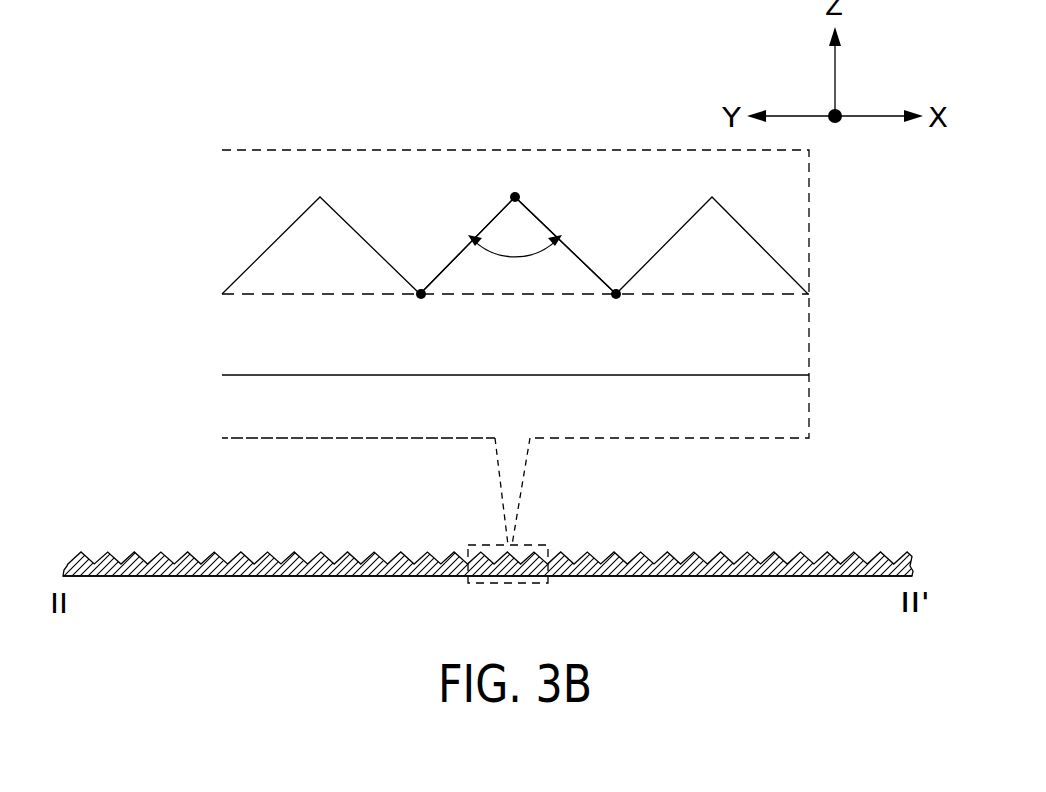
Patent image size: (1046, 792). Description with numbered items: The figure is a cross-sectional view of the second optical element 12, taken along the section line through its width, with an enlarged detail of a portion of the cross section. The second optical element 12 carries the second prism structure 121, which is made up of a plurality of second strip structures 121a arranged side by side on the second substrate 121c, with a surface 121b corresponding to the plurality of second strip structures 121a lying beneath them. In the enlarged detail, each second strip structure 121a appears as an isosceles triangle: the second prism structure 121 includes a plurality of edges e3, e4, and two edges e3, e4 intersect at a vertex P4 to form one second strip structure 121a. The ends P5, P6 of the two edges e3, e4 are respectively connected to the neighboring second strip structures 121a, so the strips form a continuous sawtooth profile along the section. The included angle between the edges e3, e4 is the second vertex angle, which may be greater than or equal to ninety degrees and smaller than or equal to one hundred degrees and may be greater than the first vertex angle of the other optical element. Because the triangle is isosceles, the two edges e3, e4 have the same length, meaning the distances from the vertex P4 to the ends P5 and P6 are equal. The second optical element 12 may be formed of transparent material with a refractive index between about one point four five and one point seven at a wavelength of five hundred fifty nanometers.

The second optical element 12 is at (100, 500).
The second prism structure 121 is at (505, 386).
The second strip structure 121a is at (735, 250).
The surface 121b is at (770, 376).
The second substrate 121c is at (770, 337).
The vertex P4 is at (517, 178).
The end P5 is at (425, 314).
The end P6 is at (620, 314).
The edge e3 is at (462, 243).
The edge e4 is at (577, 238).